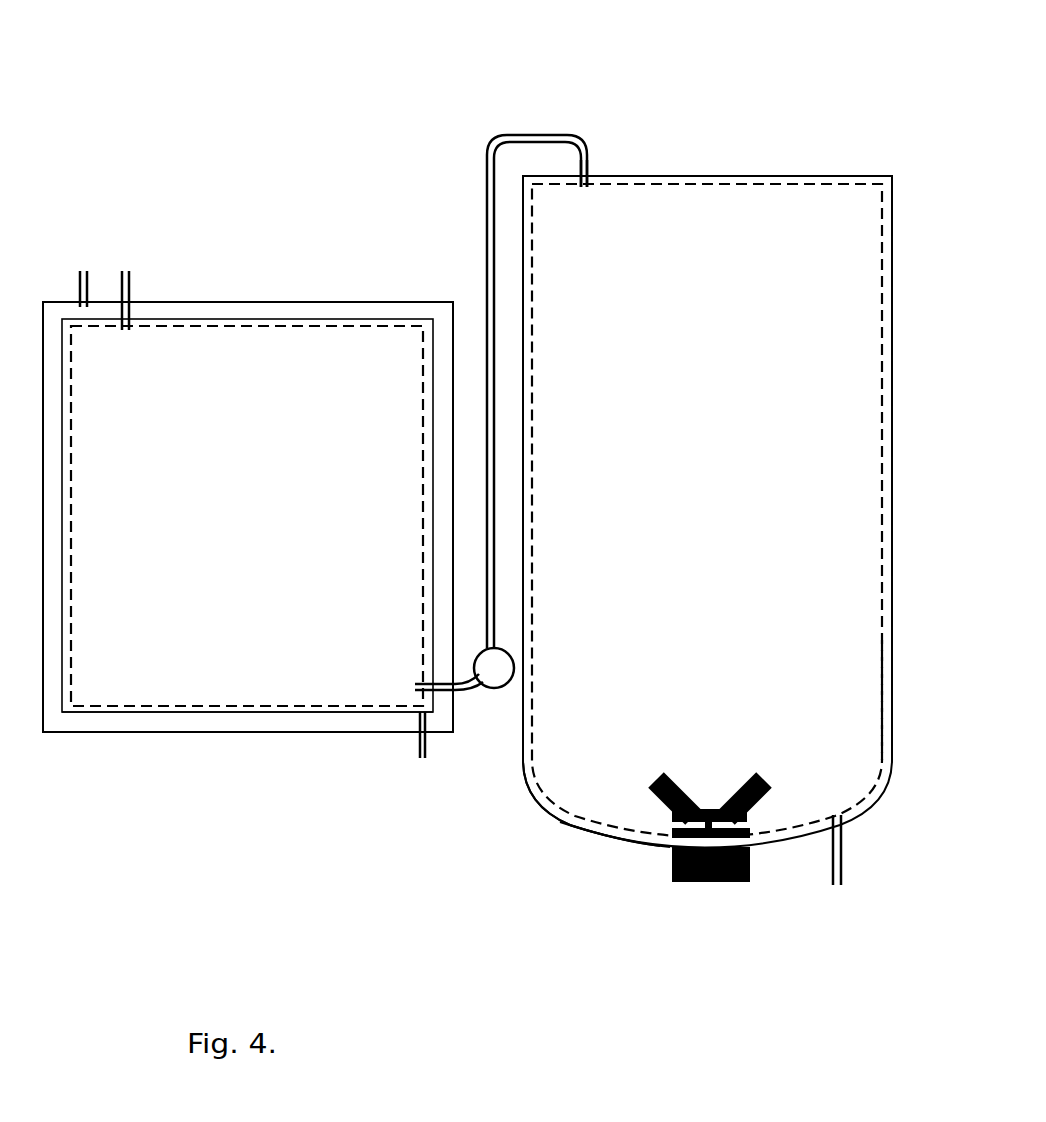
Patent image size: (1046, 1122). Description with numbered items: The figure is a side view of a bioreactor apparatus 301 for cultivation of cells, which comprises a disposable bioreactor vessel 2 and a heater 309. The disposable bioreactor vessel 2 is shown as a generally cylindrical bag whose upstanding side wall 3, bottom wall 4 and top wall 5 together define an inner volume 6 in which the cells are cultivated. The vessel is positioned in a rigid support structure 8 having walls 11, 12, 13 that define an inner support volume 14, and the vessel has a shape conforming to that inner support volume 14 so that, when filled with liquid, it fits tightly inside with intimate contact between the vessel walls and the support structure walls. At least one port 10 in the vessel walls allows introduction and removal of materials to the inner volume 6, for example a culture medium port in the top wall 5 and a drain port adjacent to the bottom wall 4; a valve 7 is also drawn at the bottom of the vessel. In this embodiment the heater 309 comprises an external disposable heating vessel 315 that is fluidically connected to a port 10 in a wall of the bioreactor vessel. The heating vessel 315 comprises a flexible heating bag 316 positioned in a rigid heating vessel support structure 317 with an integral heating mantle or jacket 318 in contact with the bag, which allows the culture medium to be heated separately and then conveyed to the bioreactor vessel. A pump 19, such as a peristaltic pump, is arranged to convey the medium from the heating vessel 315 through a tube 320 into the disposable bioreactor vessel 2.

The disposable bioreactor vessel 2 is at (882, 225).
The side wall 3 is at (880, 710).
The bottom wall 4 is at (580, 818).
The top wall 5 is at (745, 183).
The inner volume 6 is at (708, 345).
The valve 7 is at (708, 810).
The rigid support structure 8 is at (518, 747).
The port 10 is at (585, 160).
The wall of support structure 11 is at (892, 552).
The wall of support structure 12 is at (612, 840).
The wall of support structure 13 is at (833, 175).
The inner support volume 14 is at (712, 507).
The pump 19 is at (492, 688).
The bioreactor apparatus 301 is at (359, 92).
The heater 309 is at (242, 276).
The external disposable heating vessel 315 is at (347, 302).
The flexible heating bag 316 is at (287, 327).
The rigid heating vessel support structure 317 is at (142, 733).
The heating mantle or jacket 318 is at (285, 723).
The tube 320 is at (497, 143).